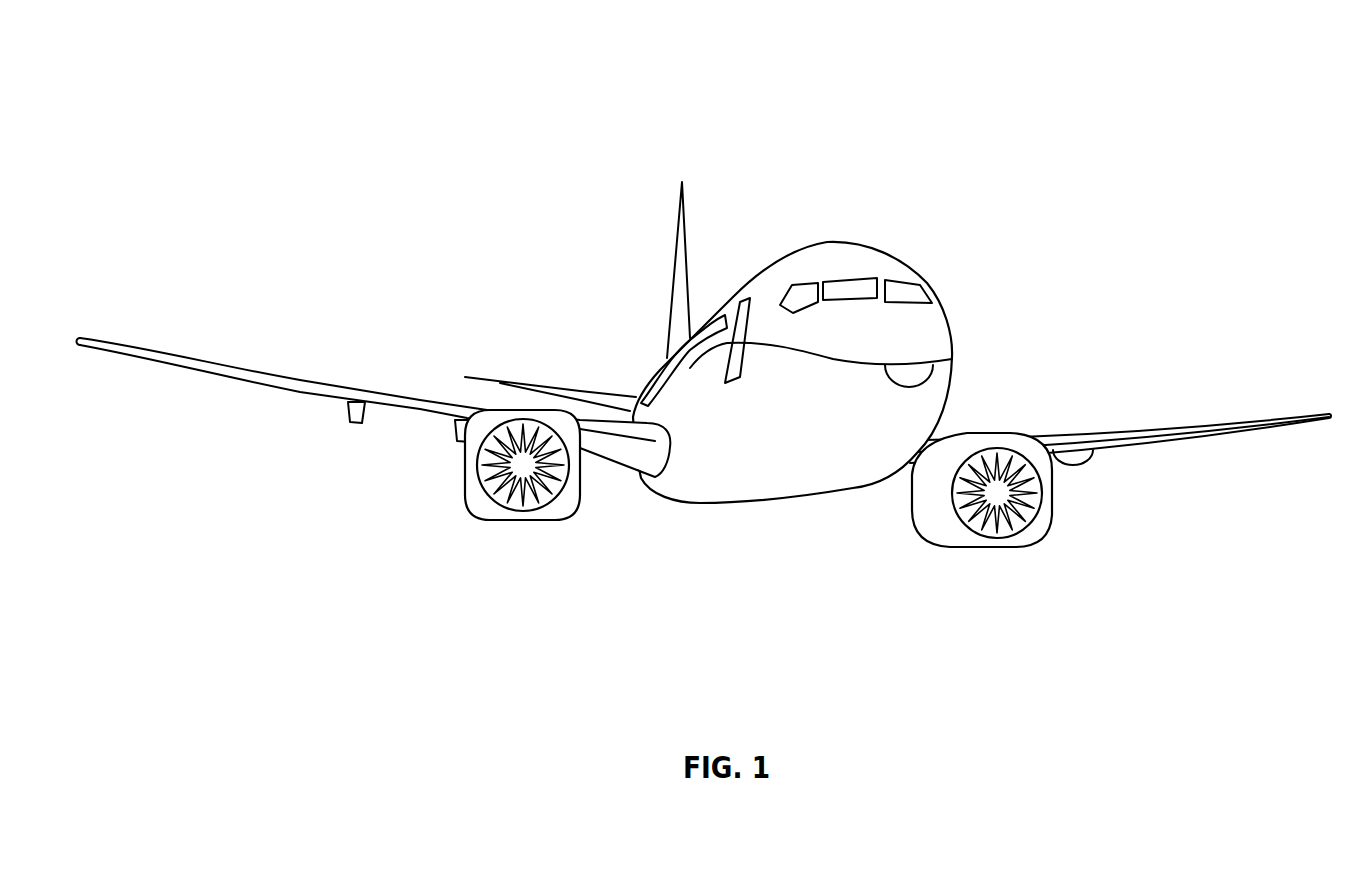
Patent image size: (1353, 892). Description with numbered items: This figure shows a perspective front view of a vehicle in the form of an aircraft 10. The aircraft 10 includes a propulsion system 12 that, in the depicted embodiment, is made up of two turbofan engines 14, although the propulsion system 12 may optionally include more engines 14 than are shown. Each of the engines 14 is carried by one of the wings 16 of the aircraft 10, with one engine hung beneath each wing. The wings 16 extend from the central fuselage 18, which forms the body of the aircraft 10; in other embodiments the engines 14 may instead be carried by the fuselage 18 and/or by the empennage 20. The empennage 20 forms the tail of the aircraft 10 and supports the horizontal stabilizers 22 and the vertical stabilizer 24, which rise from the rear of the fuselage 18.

The aircraft 10 is at (386, 144).
The propulsion system 12 is at (1075, 547).
The turbofan engines 14 is at (520, 522).
The wings 16 is at (250, 370).
The fuselage 18 is at (950, 363).
The empennage 20 is at (667, 357).
The horizontal stabilizers 22 is at (508, 380).
The vertical stabilizer 24 is at (677, 230).